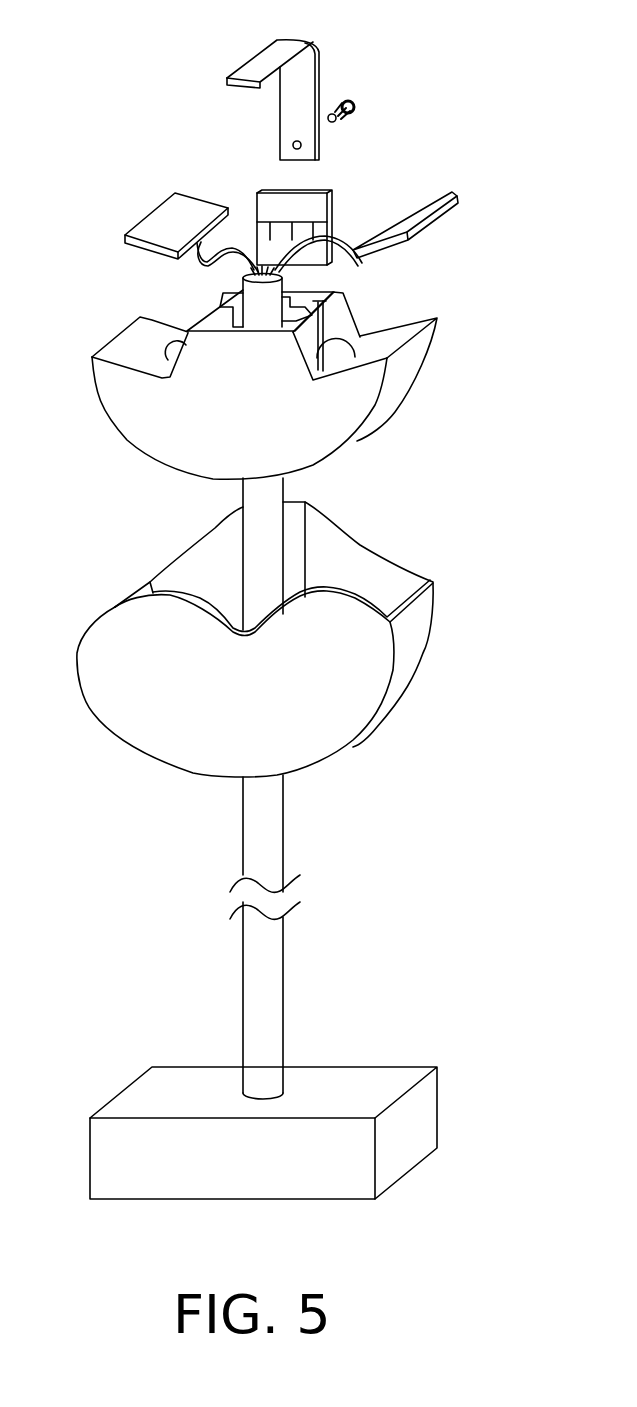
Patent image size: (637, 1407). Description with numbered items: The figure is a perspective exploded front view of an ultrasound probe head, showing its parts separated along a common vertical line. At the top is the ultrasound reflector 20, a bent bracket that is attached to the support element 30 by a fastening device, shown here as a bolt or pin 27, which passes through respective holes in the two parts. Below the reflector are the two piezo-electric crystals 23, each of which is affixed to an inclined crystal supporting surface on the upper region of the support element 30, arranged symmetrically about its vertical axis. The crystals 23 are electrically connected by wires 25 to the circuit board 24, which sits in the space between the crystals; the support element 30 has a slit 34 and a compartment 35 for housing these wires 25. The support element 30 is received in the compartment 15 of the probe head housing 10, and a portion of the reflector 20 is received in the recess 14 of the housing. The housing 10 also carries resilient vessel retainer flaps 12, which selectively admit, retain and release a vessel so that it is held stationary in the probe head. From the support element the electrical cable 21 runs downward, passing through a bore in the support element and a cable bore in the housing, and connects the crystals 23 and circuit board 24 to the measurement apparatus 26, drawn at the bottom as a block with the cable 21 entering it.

The probe head housing 10 is at (282, 647).
The resilient vessel retainer flaps 12 is at (360, 660).
The recess 14 is at (297, 527).
The compartment 15 is at (363, 563).
The ultrasound reflector 20 is at (277, 50).
The electrical cable 21 is at (267, 838).
The piezo-electric crystals 23 is at (167, 222).
The circuit board 24 is at (318, 193).
The wires 25 is at (338, 235).
The measurement apparatus 26 is at (405, 1137).
The bolt or pin 27 is at (358, 100).
The support element 30 is at (414, 435).
The slit 34 is at (337, 362).
The compartment 35 is at (333, 340).